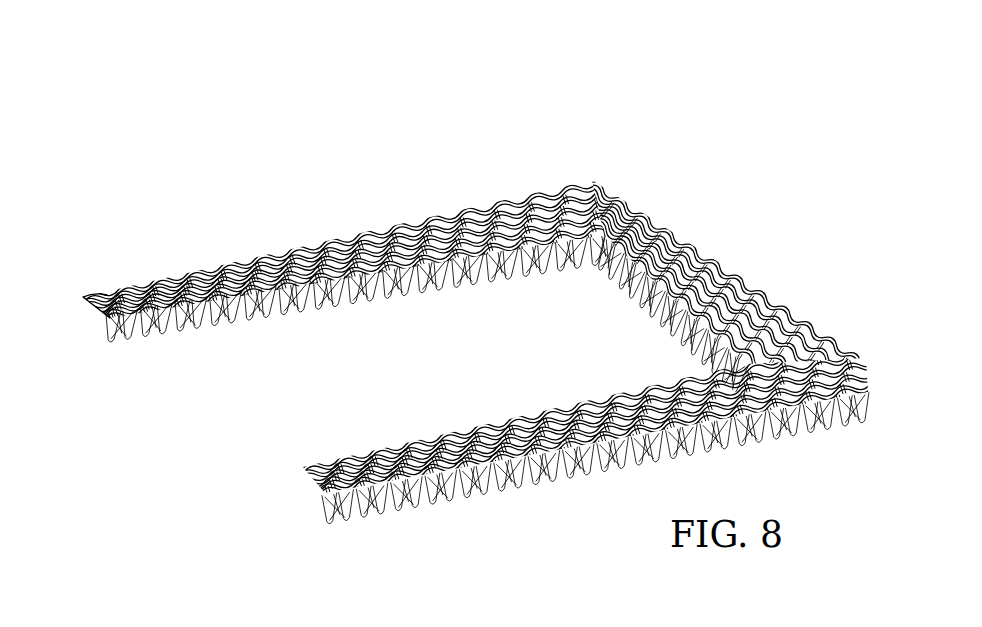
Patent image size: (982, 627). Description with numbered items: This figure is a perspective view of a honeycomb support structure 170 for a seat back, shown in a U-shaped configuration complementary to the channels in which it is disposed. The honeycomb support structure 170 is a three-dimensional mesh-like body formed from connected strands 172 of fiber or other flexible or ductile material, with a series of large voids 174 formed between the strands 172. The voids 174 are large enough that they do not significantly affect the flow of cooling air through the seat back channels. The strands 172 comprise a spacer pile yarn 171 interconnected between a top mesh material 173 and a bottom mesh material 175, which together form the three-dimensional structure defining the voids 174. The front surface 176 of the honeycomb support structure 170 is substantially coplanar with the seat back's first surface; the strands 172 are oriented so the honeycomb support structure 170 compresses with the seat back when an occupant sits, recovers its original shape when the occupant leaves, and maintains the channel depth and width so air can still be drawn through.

The honeycomb support structure 170 is at (629, 138).
The spacer pile yarn 171 is at (119, 337).
The strands 172 is at (430, 213).
The top mesh material 173 is at (171, 290).
The voids 174 is at (527, 192).
The bottom mesh material 175 is at (187, 349).
The front surface 176 is at (290, 252).